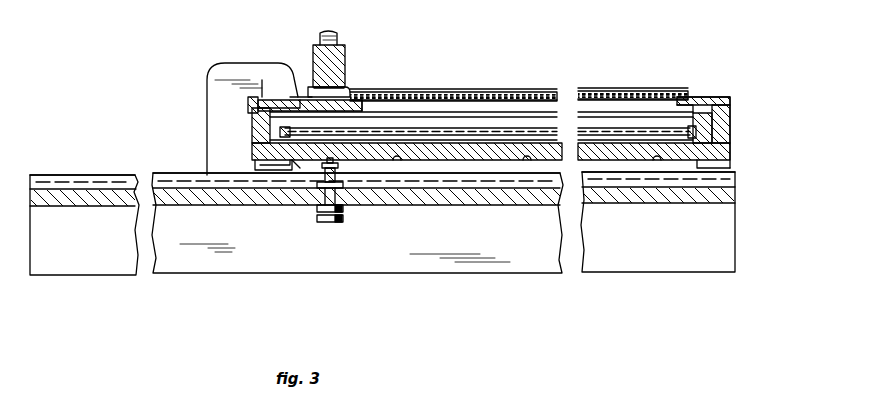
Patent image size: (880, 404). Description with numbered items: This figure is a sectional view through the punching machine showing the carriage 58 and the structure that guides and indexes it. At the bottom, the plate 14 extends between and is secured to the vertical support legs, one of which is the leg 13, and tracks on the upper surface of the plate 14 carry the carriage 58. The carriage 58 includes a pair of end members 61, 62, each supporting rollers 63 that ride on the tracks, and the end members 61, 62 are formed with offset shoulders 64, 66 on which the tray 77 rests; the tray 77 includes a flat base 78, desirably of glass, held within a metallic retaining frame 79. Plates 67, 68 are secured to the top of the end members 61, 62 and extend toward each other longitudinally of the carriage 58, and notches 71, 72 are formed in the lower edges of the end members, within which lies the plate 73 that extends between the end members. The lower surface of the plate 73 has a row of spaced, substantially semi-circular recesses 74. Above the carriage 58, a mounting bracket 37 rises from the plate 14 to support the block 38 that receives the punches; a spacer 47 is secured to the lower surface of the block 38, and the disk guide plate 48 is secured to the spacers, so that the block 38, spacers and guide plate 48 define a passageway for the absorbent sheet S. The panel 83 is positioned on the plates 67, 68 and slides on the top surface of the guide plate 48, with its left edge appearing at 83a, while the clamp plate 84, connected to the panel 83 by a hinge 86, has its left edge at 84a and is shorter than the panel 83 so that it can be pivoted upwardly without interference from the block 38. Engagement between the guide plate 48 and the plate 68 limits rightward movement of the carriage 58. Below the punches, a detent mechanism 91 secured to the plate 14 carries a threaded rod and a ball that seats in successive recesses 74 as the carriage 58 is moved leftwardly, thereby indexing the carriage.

The vertical support leg 13 is at (690, 258).
The plate 14 is at (200, 196).
The mounting bracket 37 is at (228, 66).
The block 38 is at (341, 48).
The spacer 47 is at (325, 92).
The disk guide plate 48 is at (366, 105).
The carriage 58 is at (711, 80).
The end member 61 is at (722, 114).
The end member 62 is at (253, 135).
The roller 63 is at (297, 168).
The offset shoulder 64 is at (728, 142).
The offset shoulder 66 is at (256, 163).
The plate 67 is at (724, 102).
The plate 68 is at (263, 97).
The notch 71 is at (732, 163).
The notch 72 is at (292, 152).
The plate 73 is at (503, 152).
The recess 74 is at (397, 152).
The tray 77 is at (442, 110).
The flat base 78 is at (590, 128).
The retaining frame 79 is at (690, 130).
The panel 83 is at (285, 98).
The left edge of panel 83a is at (250, 103).
The clamp plate 84 is at (413, 91).
The left edge of clamp plate 84a is at (322, 93).
The hinge 86 is at (493, 91).
The detent mechanism 91 is at (351, 218).
The absorbent sheet S is at (300, 96).